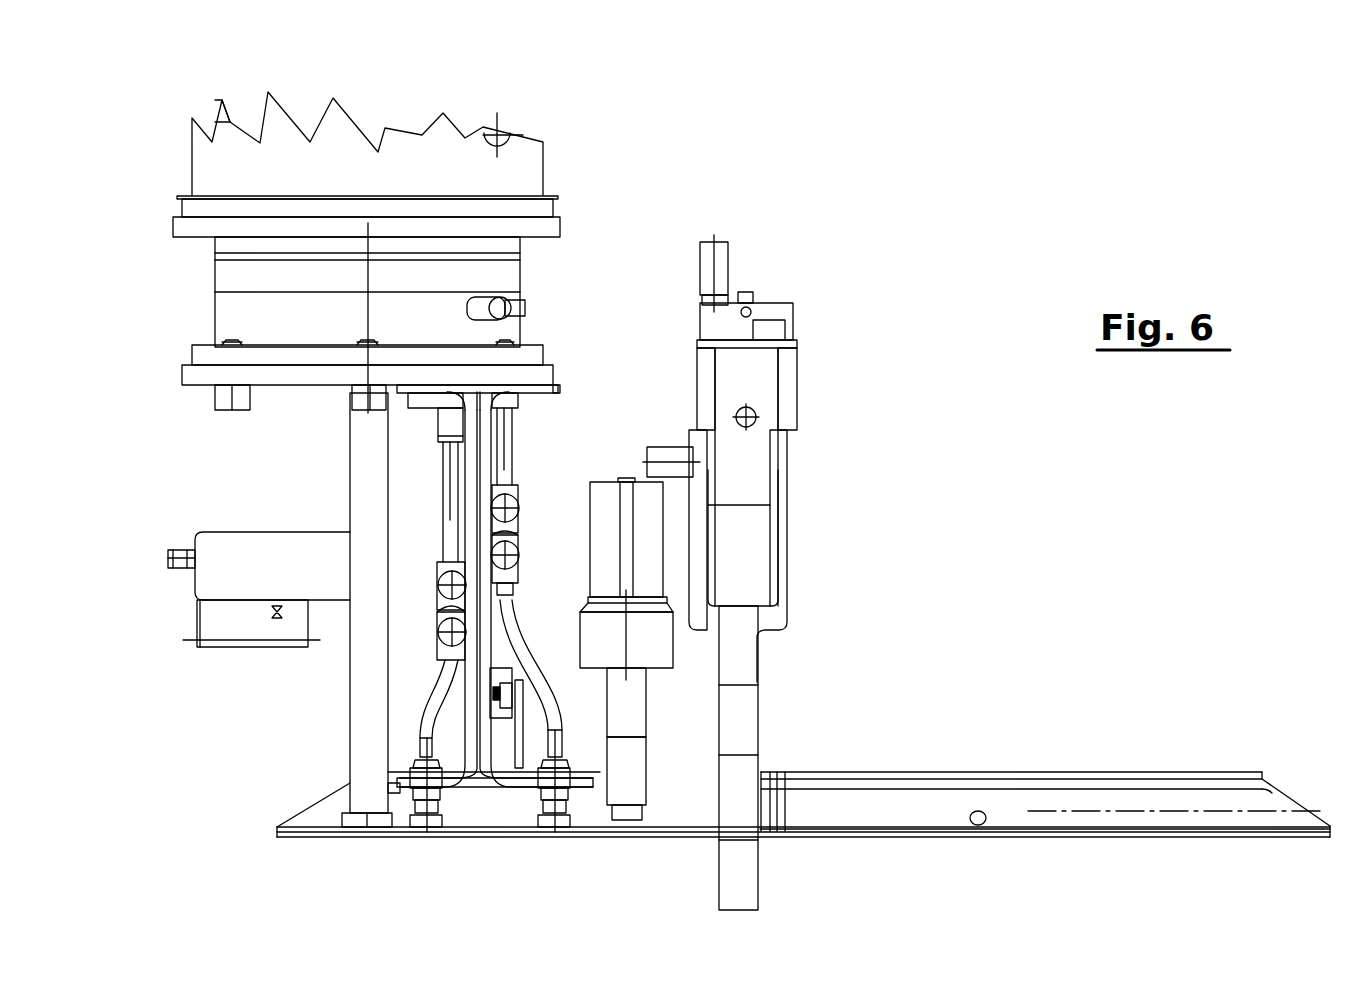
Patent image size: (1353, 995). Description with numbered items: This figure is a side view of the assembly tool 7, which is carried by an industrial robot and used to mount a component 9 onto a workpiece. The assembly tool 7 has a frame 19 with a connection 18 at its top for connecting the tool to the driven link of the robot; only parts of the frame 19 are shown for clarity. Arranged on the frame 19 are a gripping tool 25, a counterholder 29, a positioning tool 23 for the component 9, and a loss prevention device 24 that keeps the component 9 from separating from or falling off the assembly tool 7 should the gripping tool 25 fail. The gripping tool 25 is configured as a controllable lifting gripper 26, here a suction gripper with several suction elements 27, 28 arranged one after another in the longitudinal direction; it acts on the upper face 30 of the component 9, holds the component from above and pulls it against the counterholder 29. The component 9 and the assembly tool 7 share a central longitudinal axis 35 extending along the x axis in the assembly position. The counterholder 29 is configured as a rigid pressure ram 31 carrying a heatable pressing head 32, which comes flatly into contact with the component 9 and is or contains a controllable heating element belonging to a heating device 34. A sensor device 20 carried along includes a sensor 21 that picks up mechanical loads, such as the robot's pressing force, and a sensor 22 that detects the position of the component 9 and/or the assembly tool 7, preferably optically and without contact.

The assembly tool 7 is at (826, 380).
The component 9 is at (1067, 833).
The connection 18 is at (188, 377).
The frame 19 is at (488, 440).
The sensor device 20 is at (172, 616).
The sensor 21 is at (226, 278).
The sensor 22 is at (225, 624).
The positioning tool 23 is at (620, 780).
The loss prevention device 24 is at (744, 862).
The gripping tool 25 is at (488, 847).
The lifting gripper 26 is at (803, 831).
The suction element 27 is at (425, 822).
The suction element 28 is at (547, 822).
The counterholder 29 is at (339, 679).
The upper face 30 is at (906, 762).
The pressure ram 31 is at (372, 747).
The pressing head 32 is at (353, 822).
The heating device 34 is at (244, 549).
The central longitudinal axis 35 is at (1167, 811).